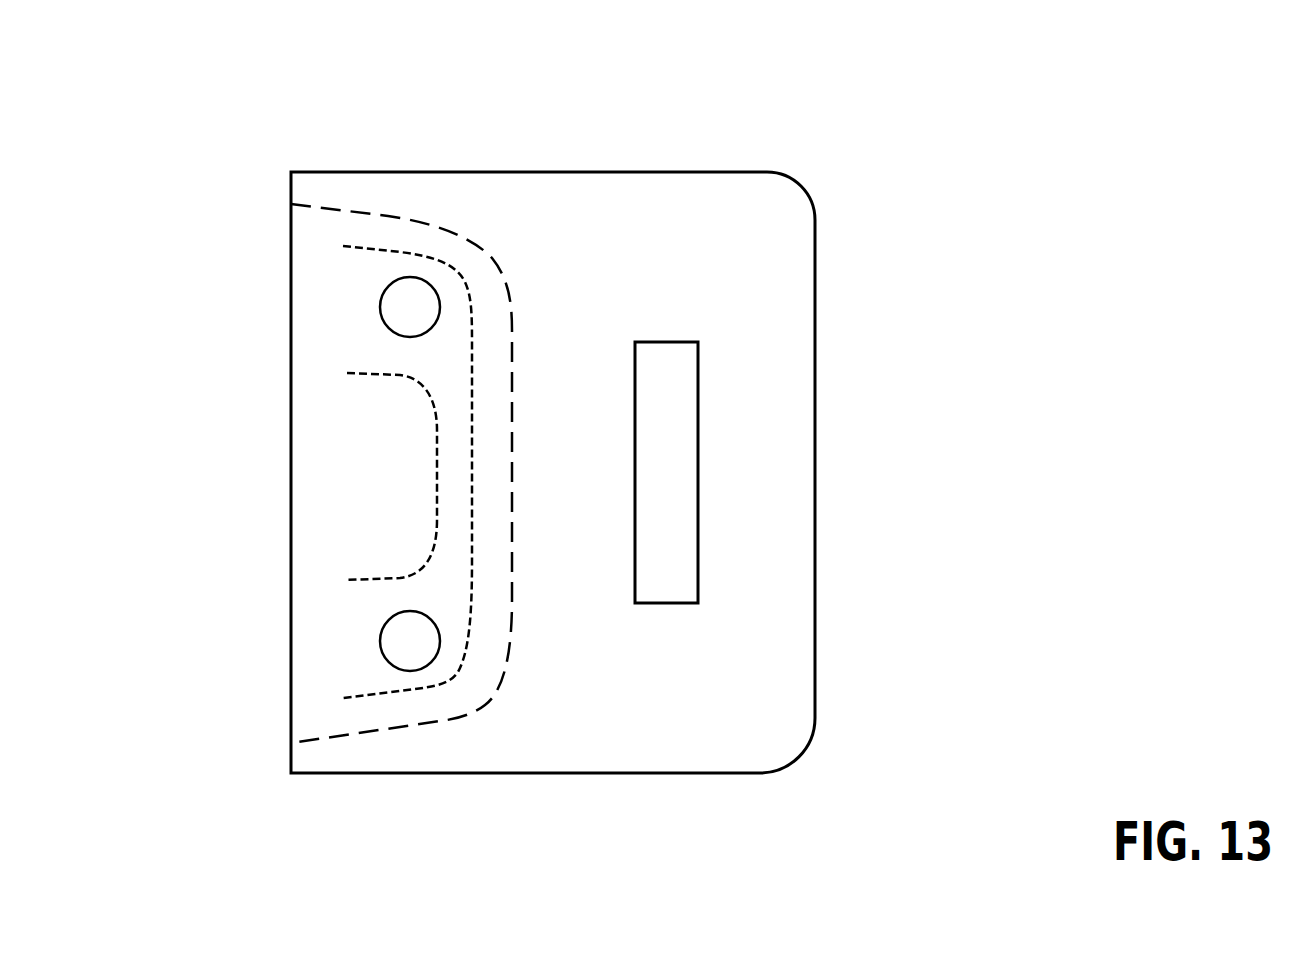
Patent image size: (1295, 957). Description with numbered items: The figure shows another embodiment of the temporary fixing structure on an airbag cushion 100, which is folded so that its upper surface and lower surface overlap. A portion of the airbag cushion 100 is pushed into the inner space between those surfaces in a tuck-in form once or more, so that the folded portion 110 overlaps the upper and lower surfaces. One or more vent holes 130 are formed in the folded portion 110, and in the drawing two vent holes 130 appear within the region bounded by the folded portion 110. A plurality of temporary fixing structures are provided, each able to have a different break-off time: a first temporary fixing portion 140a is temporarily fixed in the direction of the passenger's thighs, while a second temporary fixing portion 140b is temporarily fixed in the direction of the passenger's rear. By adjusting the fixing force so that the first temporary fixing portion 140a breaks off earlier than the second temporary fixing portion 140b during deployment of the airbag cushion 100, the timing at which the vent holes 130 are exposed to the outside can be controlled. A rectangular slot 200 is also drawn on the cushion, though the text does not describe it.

The airbag cushion 100 is at (620, 172).
The folded portion 110 is at (387, 178).
The vent hole 130 is at (407, 307).
The first temporary fixing portion 140a is at (433, 685).
The second temporary fixing portion 140b is at (437, 477).
The slot 200 is at (682, 468).